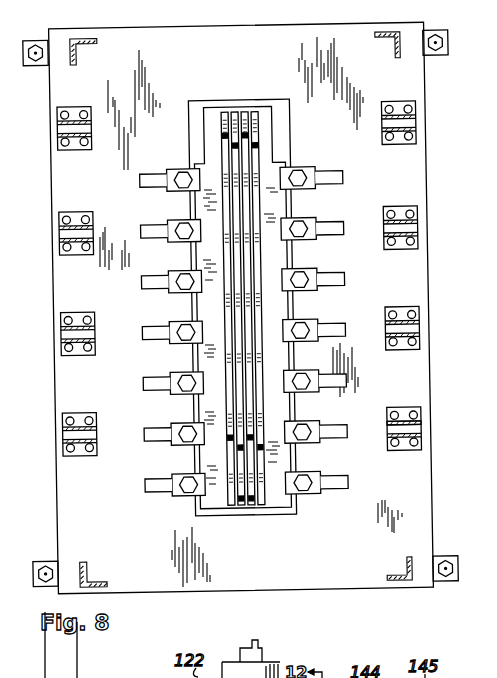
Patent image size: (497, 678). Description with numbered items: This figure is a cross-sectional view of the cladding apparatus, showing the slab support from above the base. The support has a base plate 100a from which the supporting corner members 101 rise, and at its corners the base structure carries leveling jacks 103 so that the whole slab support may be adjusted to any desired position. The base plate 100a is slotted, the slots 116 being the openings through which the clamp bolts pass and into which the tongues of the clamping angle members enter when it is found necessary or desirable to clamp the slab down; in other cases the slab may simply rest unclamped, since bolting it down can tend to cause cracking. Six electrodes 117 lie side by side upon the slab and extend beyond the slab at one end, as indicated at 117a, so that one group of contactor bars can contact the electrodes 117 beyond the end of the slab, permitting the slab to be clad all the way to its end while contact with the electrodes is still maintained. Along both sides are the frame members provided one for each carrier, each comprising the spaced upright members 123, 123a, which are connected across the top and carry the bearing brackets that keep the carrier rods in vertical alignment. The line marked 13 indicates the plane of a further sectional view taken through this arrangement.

The base plate 100a is at (327, 585).
The supporting corner members 101 is at (86, 50).
The leveling jacks 103 is at (433, 57).
The slots 116 is at (333, 425).
The electrodes 117 is at (256, 514).
The electrode extension beyond slab 117a is at (257, 128).
The upright member 123 is at (425, 437).
The upright member 123a is at (423, 423).
The section line 13- 13 is at (137, 366).